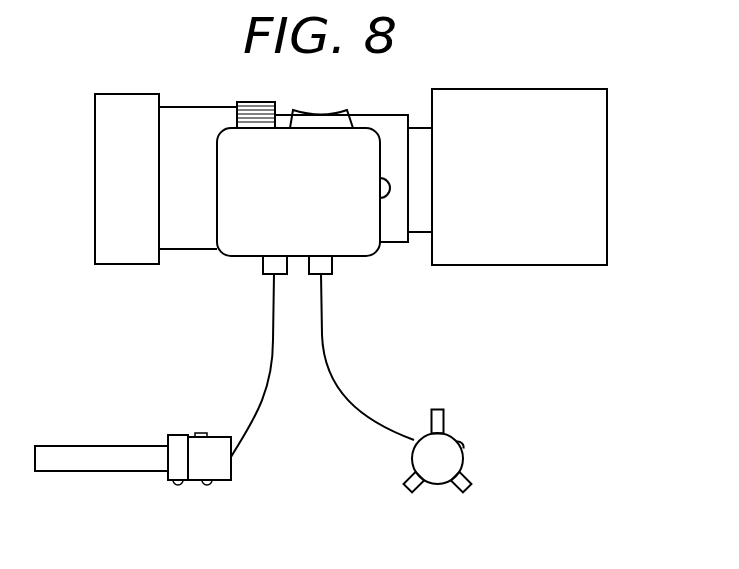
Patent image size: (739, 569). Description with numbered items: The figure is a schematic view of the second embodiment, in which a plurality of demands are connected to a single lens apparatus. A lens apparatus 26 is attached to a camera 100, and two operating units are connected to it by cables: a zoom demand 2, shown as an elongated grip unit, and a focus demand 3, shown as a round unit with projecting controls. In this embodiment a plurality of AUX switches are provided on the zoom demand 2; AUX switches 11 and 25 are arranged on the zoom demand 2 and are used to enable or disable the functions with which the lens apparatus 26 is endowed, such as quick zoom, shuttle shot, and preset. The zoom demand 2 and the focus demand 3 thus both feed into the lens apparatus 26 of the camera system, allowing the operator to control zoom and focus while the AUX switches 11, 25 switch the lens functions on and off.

The zoom demand 2 is at (97, 452).
The focus demand 3 is at (460, 457).
The AUX switch 11 is at (208, 485).
The AUX switch 25 is at (178, 485).
The lens apparatus 26 is at (123, 256).
The camera 100 is at (553, 259).